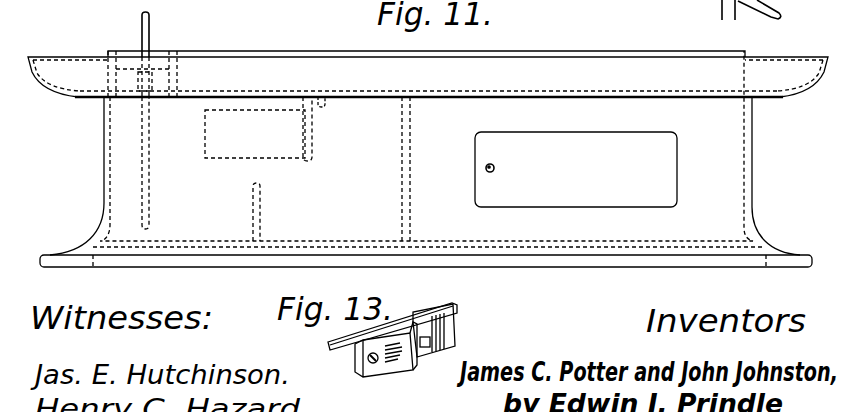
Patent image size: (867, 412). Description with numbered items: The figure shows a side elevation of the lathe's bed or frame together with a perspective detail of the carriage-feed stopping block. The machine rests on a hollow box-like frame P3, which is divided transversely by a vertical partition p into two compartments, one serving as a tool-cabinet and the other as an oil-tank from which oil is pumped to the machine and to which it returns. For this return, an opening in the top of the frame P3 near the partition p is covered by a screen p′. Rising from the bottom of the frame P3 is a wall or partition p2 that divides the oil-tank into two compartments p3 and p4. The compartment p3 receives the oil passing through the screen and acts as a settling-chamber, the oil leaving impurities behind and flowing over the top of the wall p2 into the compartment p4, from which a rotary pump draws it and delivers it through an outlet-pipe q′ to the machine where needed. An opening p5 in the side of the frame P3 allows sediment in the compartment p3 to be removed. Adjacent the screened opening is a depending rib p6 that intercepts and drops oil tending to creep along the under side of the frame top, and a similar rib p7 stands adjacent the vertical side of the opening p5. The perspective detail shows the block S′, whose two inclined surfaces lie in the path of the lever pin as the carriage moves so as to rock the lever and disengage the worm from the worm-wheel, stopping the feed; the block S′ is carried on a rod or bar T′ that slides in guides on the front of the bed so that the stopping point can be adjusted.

In FIG. 11, the hollow box-like frame P3 is at (768, 165).
In FIG. 11, the outlet-pipe q′ is at (142, 28).
In FIG. 11, the screen p′ is at (358, 90).
In FIG. 11, the vertical partition p is at (402, 172).
In FIG. 11, the wall or partition p2 is at (253, 201).
In FIG. 11, the settling compartment p3 is at (310, 218).
In FIG. 11, the pump compartment p4 is at (151, 203).
In FIG. 11, the opening p5 is at (205, 133).
In FIG. 11, the depending rib p6 is at (323, 106).
In FIG. 11, the rib p7 is at (312, 163).
In FIG. 13, the rod or bar T′ is at (459, 311).
In FIG. 13, the block S′ is at (398, 369).